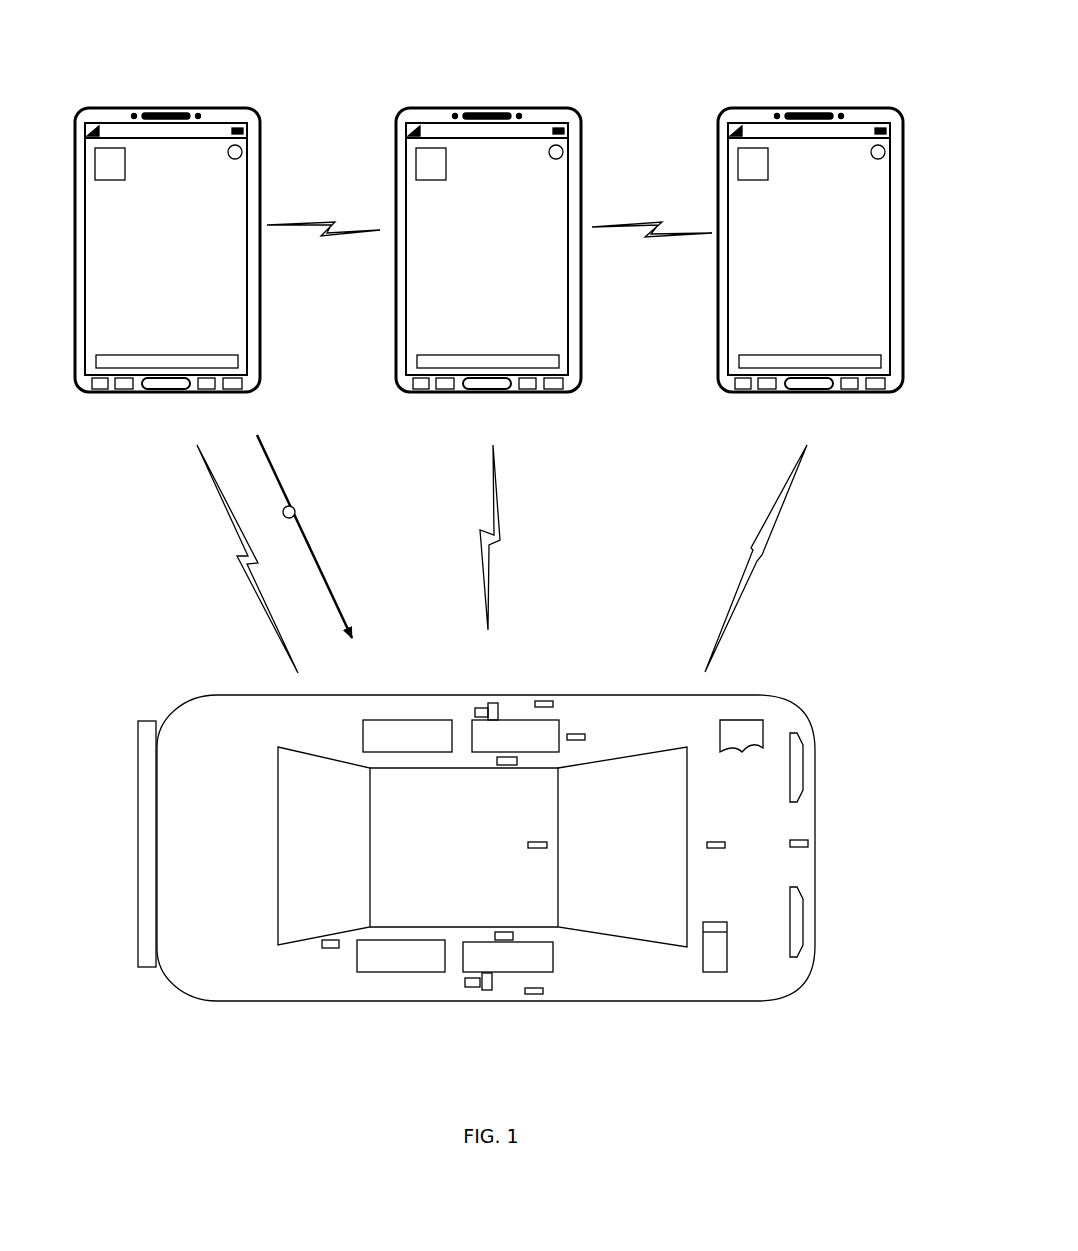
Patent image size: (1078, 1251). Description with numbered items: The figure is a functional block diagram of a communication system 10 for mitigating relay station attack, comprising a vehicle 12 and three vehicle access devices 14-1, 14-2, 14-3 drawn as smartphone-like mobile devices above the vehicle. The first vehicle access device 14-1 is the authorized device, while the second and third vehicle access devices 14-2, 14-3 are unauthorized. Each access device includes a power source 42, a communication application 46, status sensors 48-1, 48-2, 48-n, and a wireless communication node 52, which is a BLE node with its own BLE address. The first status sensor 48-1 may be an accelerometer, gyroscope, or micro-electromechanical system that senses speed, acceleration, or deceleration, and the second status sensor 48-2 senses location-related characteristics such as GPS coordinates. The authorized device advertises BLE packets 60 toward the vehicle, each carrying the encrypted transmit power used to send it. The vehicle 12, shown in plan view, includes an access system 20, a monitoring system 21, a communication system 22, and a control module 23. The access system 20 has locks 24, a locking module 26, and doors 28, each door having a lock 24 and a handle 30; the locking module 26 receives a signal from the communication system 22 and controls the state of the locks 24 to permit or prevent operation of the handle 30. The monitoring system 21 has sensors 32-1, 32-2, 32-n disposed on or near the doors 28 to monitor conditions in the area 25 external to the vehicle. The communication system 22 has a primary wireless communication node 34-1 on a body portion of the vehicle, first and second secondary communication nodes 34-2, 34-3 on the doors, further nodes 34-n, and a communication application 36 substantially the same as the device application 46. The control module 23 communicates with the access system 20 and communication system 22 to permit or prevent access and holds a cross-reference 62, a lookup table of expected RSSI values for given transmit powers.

The communication system 10 is at (839, 40).
The vehicle 12 is at (787, 668).
The first vehicle access device 14-1 is at (246, 96).
The second vehicle access device 14-2 is at (593, 89).
The third vehicle access device 14-3 is at (812, 92).
The access system 20 is at (574, 710).
The monitoring system 21 is at (561, 932).
The communication system 22 is at (602, 839).
The control module 23 is at (727, 952).
The lock 24 is at (493, 703).
The area 25 is at (127, 1056).
The locking module 26 is at (585, 737).
The door 28 is at (510, 701).
The handle 30 is at (474, 712).
The sensor 32-1 is at (495, 761).
The sensor 32-2 is at (495, 933).
The sensor 32-n is at (809, 843).
The primary wireless communication node 34-1 is at (548, 843).
The first secondary communication node 34-2 is at (546, 699).
The second secondary communication node 34-3 is at (322, 944).
The wireless communication node 34-n is at (716, 840).
The communication application 36 is at (714, 920).
The power source 42 is at (238, 361).
The communication application 46 is at (125, 165).
The first status sensor 48-1 is at (245, 389).
The second status sensor 48-2 is at (217, 389).
The status sensor 48-n is at (135, 389).
The wireless communication node 52 is at (235, 159).
The BLE packet 60 is at (295, 511).
The cross-reference 62 is at (766, 718).